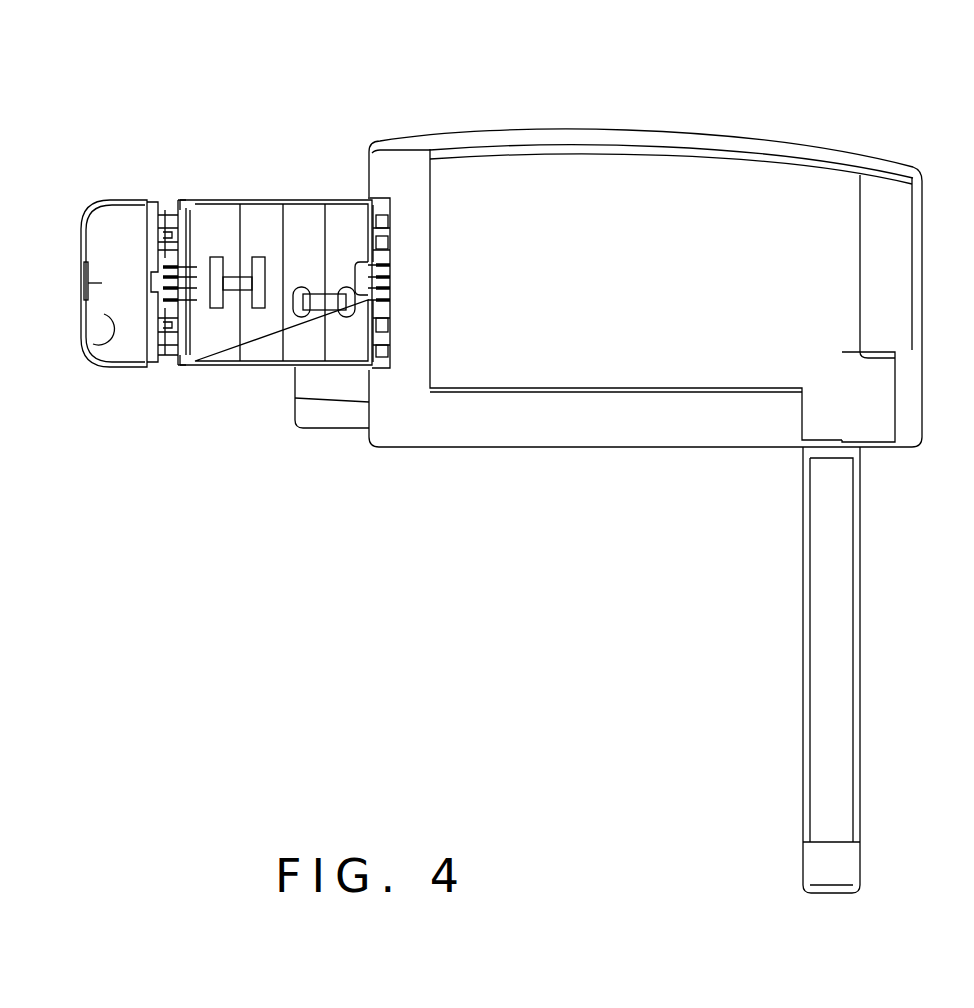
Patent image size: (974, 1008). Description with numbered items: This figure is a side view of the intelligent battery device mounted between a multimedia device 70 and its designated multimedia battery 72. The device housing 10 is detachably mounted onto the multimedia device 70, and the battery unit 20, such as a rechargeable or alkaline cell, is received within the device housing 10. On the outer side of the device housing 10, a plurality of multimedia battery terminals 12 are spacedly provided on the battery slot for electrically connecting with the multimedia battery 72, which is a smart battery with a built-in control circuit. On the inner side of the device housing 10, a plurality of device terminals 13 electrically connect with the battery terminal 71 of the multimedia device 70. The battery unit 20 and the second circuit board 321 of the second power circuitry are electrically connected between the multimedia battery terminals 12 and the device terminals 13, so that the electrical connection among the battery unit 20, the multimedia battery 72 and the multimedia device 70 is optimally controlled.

The device housing 10 is at (212, 198).
The multimedia battery terminals 12 is at (196, 345).
The device terminals 13 is at (340, 203).
The battery unit 20 is at (212, 342).
The second circuit board 321 is at (183, 203).
The multimedia device 70 is at (722, 197).
The battery terminal 71 is at (387, 277).
The multimedia battery 72 is at (115, 319).